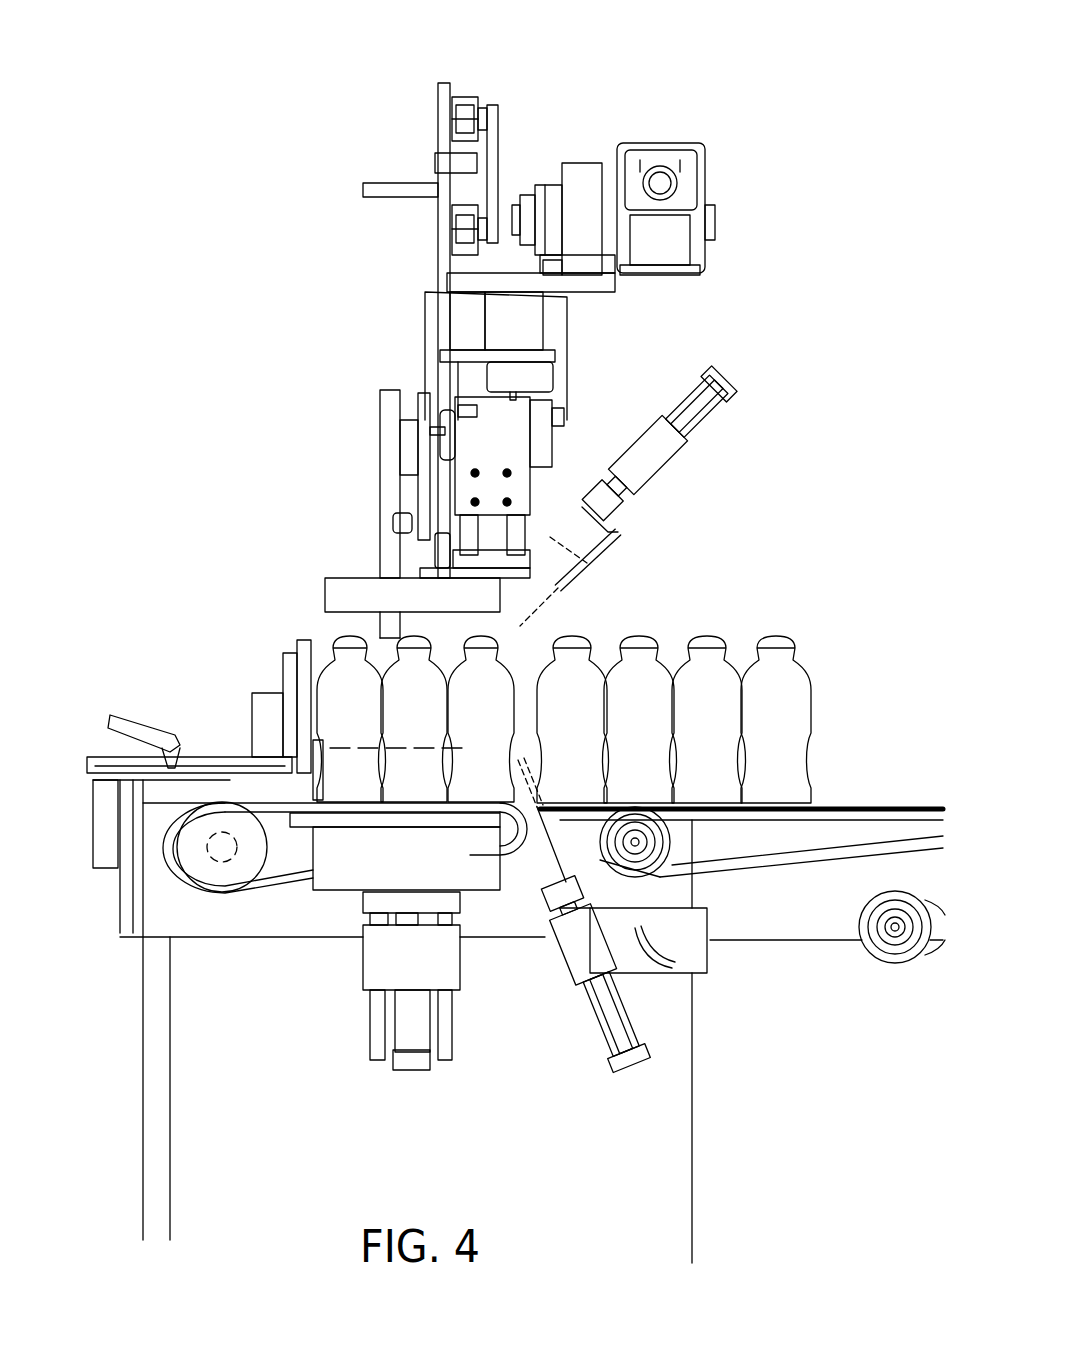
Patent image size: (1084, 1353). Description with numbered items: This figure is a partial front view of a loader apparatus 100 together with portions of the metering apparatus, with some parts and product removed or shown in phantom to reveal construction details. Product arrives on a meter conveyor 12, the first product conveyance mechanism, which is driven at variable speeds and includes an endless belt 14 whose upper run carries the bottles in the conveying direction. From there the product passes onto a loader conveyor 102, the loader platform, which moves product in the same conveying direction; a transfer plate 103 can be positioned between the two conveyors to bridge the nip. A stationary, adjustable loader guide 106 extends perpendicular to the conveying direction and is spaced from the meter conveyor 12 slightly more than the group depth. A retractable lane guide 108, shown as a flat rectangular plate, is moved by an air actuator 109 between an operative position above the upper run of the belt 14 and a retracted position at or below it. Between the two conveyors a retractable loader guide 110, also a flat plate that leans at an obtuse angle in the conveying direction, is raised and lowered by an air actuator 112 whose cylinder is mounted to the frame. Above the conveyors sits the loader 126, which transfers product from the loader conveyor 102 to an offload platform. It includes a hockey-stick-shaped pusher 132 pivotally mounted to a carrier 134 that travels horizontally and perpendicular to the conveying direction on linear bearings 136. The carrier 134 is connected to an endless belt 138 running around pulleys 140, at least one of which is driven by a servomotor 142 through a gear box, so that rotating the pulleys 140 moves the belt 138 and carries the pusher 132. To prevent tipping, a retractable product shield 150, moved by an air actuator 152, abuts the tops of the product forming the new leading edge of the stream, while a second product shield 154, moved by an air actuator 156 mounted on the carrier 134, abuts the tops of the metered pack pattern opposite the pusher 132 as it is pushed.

The loader apparatus 100 is at (232, 235).
The meter conveyor 12 is at (914, 772).
The endless belt 14 is at (847, 808).
The loader conveyor 102 is at (230, 893).
The transfer plate 103 is at (545, 805).
The loader guide 106 is at (300, 650).
The lane guide 108 is at (262, 757).
The air actuator 109 is at (363, 963).
The retractable loader guide 110 is at (540, 812).
The air actuator 112 is at (558, 938).
The loader 126 is at (549, 108).
The pusher 132 is at (388, 452).
The carrier 134 is at (437, 242).
The linear bearings 136 is at (452, 115).
The endless belt 138 is at (577, 190).
The pulleys 140 is at (602, 248).
The servomotor 142 is at (708, 188).
The product shield 150 is at (600, 553).
The air actuator 152 is at (690, 433).
The product shield 154 is at (340, 592).
The air actuator 156 is at (530, 497).